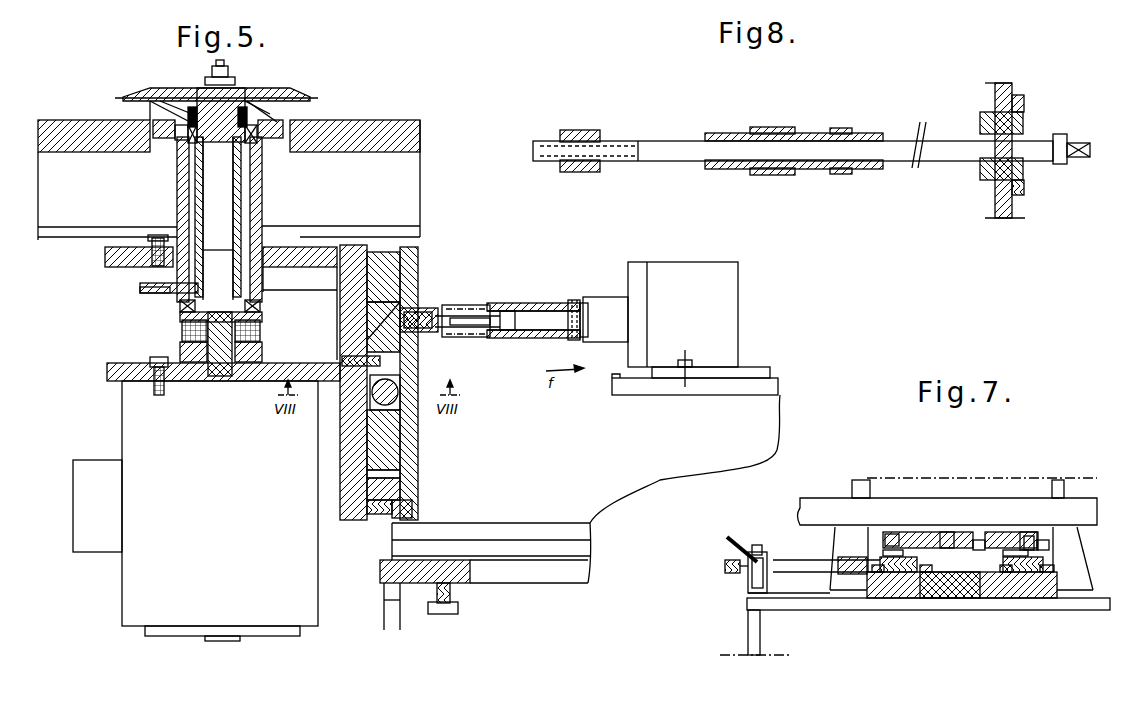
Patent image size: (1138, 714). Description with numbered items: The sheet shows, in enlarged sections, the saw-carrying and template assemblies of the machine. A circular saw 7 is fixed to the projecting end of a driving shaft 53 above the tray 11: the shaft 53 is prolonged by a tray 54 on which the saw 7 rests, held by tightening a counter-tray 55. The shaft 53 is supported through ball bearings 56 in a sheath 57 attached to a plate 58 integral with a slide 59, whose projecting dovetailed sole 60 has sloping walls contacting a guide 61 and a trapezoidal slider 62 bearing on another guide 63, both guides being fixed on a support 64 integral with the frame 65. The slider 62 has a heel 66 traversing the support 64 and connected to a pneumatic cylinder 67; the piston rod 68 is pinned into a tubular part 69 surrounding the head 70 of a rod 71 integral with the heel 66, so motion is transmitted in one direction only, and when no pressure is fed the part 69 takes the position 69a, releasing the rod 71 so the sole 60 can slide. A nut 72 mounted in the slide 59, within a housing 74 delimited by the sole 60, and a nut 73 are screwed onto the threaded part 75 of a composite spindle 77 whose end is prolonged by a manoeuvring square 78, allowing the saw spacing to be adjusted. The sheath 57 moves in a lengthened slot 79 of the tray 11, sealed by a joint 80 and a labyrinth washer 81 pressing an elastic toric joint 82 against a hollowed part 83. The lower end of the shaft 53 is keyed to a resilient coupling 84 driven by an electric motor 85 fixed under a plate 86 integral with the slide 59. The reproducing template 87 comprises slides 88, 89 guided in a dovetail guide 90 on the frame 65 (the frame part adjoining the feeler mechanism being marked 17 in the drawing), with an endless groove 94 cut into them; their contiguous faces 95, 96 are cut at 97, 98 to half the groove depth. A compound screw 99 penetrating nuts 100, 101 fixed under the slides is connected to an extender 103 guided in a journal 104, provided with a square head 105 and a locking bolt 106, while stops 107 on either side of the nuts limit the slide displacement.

In FIG. 5, the saw 7 is at (282, 100).
In FIG. 5, the tray 11 is at (362, 122).
In FIG. 7, the frame 17 is at (835, 528).
In FIG. 5, the driving shaft 53 is at (226, 178).
In FIG. 5, the tray 54 is at (275, 112).
In FIG. 5, the counter-tray 55 is at (232, 88).
In FIG. 5, the ball bearings 56 is at (262, 140).
In FIG. 5, the sheath 57 is at (186, 195).
In FIG. 5, the plate 58 is at (300, 268).
In FIG. 5, the slide 59 is at (352, 250).
In FIG. 5, the sole 60 is at (395, 440).
In FIG. 5, the guide 61 is at (400, 488).
In FIG. 5, the trapezoidal slider 62 is at (612, 378).
In FIG. 5, the guide 63 is at (385, 258).
In FIG. 5, the support 64 is at (400, 510).
In FIG. 5, the frame 65 is at (530, 528).
In FIG. 7, the frame 65 is at (850, 606).
In FIG. 8, the frame 65 is at (995, 206).
In FIG. 5, the heel 66 is at (425, 333).
In FIG. 5, the pneumatic cylinder 67 is at (680, 328).
In FIG. 5, the rod 68 is at (573, 300).
In FIG. 5, the tubular part 69 is at (525, 303).
In FIG. 5, the position 69a is at (450, 305).
In FIG. 5, the head 70 is at (505, 332).
In FIG. 5, the rod 71 is at (470, 328).
In FIG. 5, the nut 72 is at (372, 398).
In FIG. 8, the nut 72 is at (583, 130).
In FIG. 8, the nut 73 is at (780, 176).
In FIG. 5, the housing 74 is at (398, 420).
In FIG. 8, the threaded part 75 is at (637, 140).
In FIG. 8, the composite spindle 77 is at (936, 156).
In FIG. 8, the manoeuvring square 78 is at (1080, 158).
In FIG. 5, the lengthened slot 79 is at (185, 148).
In FIG. 5, the joint 80 is at (182, 292).
In FIG. 5, the labyrinth washer 81 is at (175, 128).
In FIG. 5, the elastic toric joint 82 is at (165, 140).
In FIG. 5, the hollowed part 83 is at (157, 128).
In FIG. 5, the resilient coupling 84 is at (180, 326).
In FIG. 5, the electric motor 85 is at (135, 432).
In FIG. 5, the plate 86 is at (108, 373).
In FIG. 7, the reproducing template 87 is at (1049, 543).
In FIG. 7, the slide 88 is at (905, 532).
In FIG. 7, the slide 89 is at (1032, 535).
In FIG. 7, the movable guide 90 is at (950, 586).
In FIG. 7, the endless groove 94 is at (890, 535).
In FIG. 7, the contiguous face 95 is at (977, 542).
In FIG. 7, the contiguous face 96 is at (970, 556).
In FIG. 7, the cut 97 is at (965, 545).
In FIG. 7, the cut 98 is at (985, 540).
In FIG. 7, the compound screw 99 is at (935, 558).
In FIG. 7, the nut 100 is at (883, 553).
In FIG. 7, the nut 101 is at (1040, 553).
In FIG. 7, the extender 103 is at (790, 560).
In FIG. 7, the journal 104 is at (755, 585).
In FIG. 7, the manoeuvring square head 105 is at (725, 567).
In FIG. 7, the locking bolt 106 is at (727, 538).
In FIG. 7, the stop 107 is at (925, 568).